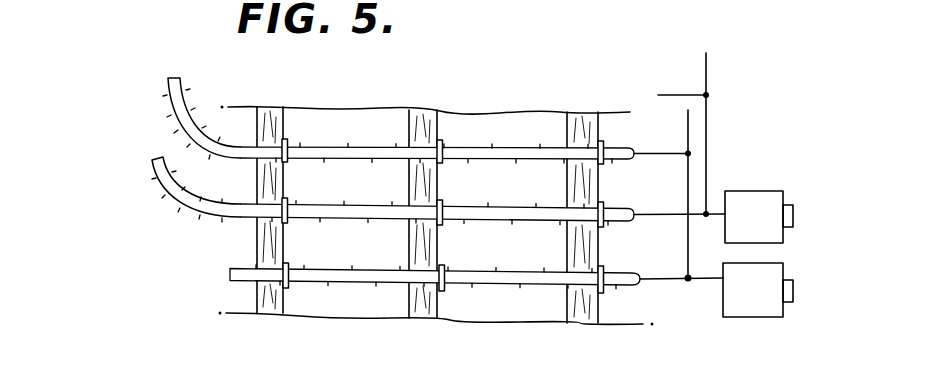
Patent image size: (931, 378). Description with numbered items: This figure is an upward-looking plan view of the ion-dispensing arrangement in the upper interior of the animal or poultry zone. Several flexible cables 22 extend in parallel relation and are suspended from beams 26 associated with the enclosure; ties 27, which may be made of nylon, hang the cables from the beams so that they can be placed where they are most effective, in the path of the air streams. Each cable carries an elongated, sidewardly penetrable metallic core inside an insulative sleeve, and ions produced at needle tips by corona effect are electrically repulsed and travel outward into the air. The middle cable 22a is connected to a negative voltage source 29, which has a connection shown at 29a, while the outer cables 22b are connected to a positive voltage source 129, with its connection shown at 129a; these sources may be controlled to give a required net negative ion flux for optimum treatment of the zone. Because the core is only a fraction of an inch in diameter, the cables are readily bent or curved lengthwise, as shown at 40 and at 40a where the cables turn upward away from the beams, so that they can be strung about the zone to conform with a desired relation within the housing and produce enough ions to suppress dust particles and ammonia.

The cables 22 is at (380, 211).
The cable 22a is at (492, 221).
The cables 22b is at (522, 148).
The beams 26 is at (427, 122).
The ties 27 is at (600, 140).
The negative voltage source 29 is at (752, 195).
The control unit connector 29a is at (793, 214).
The positive voltage source 129 is at (737, 313).
The second control unit connector 129a is at (793, 302).
The bent or curved portion of cable 40 is at (168, 124).
The bent or curved portion of cable 40a is at (147, 182).